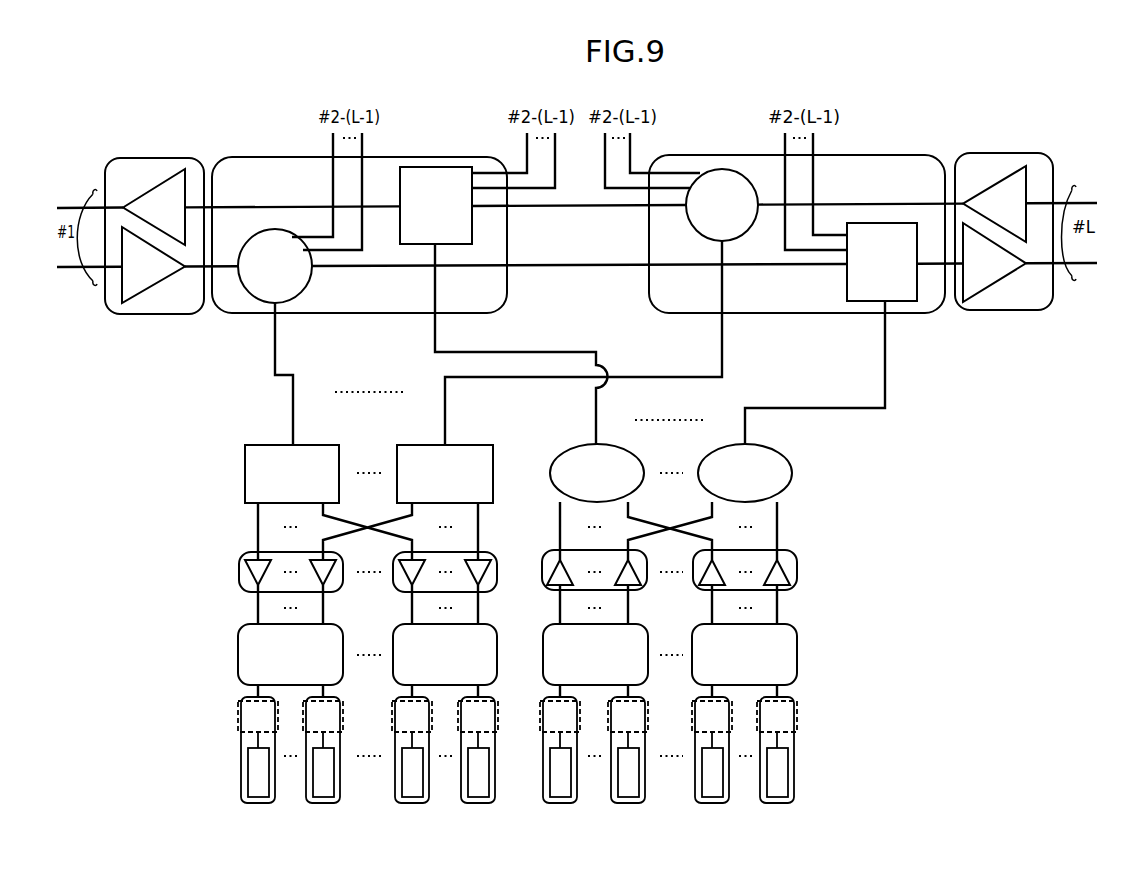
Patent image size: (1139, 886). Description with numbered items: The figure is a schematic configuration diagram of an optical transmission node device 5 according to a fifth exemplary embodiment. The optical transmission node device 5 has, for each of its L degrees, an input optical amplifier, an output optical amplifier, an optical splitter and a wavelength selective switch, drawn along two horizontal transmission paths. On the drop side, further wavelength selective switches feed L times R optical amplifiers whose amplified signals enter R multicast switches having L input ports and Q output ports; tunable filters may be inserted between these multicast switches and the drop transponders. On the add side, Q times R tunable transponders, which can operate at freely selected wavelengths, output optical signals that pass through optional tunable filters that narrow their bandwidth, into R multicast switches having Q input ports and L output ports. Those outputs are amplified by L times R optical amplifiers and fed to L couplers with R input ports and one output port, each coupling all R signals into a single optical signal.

The optical transmission node device 5 is at (1070, 136).